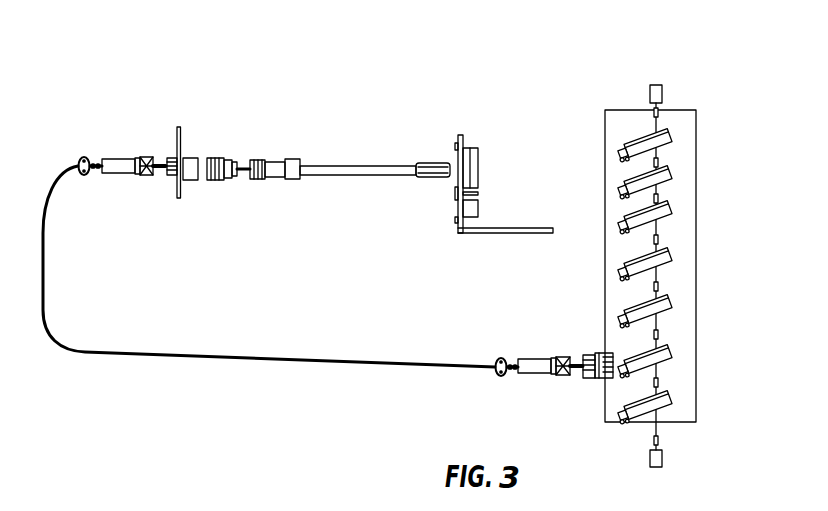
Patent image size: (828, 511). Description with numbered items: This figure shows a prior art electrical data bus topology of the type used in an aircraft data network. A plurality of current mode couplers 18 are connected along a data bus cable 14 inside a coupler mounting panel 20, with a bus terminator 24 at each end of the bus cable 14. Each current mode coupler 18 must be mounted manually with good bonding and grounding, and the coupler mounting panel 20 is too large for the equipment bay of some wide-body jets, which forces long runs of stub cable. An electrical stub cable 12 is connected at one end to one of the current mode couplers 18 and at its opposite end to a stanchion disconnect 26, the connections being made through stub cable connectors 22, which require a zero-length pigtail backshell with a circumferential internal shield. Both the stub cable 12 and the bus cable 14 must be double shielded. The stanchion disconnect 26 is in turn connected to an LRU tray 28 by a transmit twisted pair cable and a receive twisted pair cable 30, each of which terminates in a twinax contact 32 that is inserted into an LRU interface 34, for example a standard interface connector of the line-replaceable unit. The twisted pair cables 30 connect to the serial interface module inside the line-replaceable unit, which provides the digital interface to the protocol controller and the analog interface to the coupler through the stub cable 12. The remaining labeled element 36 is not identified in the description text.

The electrical stub cable 12 is at (293, 358).
The bus cable 14 is at (667, 328).
The current mode coupler 18 is at (632, 302).
The coupler mounting panel 20 is at (659, 276).
The stub cable connector 22 is at (133, 147).
The bus terminator 24 is at (662, 90).
The stanchion disconnect 26 is at (180, 127).
The LRU tray 28 is at (512, 228).
The twisted pair cable 30 is at (335, 178).
The twinax contact 32 is at (430, 160).
The LRU interface 34 is at (478, 150).
The connector 36 is at (213, 157).